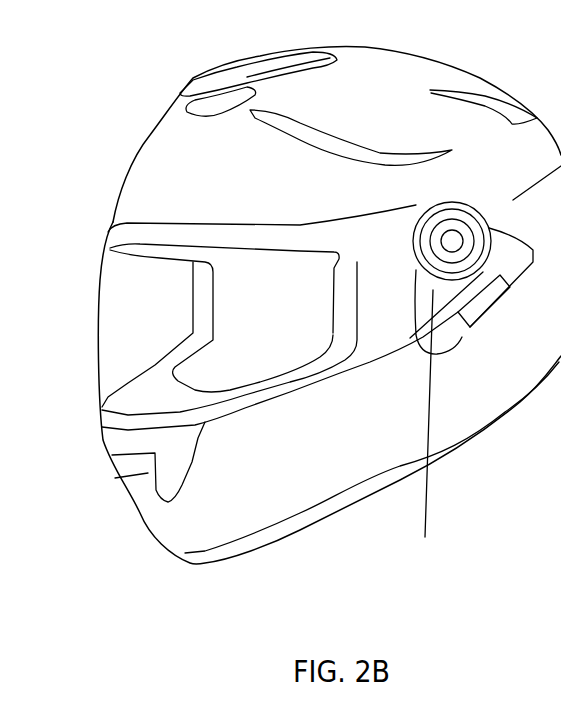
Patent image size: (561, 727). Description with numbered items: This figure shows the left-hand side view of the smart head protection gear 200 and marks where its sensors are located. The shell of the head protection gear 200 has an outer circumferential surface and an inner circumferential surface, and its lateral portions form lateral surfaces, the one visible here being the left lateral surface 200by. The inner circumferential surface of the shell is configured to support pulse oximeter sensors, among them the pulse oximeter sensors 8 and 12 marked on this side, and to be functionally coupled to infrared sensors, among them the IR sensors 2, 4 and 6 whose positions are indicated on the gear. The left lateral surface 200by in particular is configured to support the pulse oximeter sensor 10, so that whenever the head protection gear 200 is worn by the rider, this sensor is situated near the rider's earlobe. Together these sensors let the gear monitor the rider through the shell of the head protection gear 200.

The head protection gear 200 is at (172, 114).
The pulse oximeter sensor 8 is at (262, 188).
The IR sensor 2 is at (370, 126).
The pulse oximeter sensor 10 is at (245, 323).
The IR sensor 4 is at (280, 397).
The IR sensor 6 is at (471, 278).
The pulse oximeter sensor 12 is at (498, 306).
The left lateral surface 200by is at (433, 441).